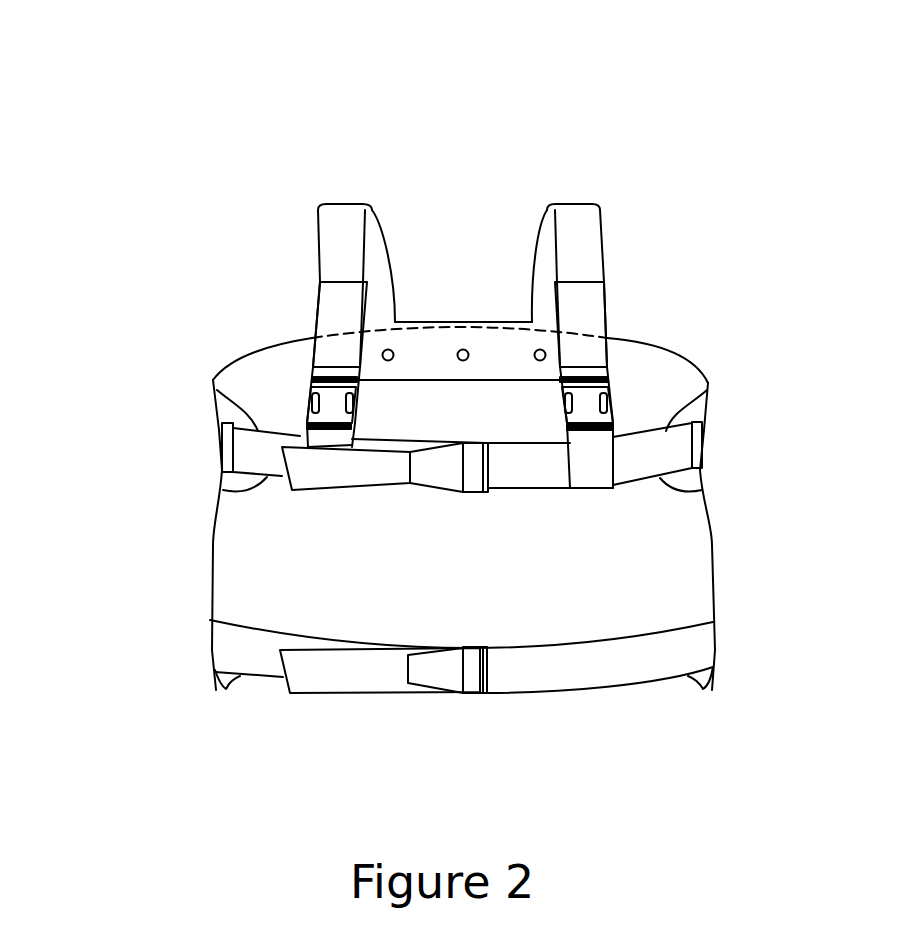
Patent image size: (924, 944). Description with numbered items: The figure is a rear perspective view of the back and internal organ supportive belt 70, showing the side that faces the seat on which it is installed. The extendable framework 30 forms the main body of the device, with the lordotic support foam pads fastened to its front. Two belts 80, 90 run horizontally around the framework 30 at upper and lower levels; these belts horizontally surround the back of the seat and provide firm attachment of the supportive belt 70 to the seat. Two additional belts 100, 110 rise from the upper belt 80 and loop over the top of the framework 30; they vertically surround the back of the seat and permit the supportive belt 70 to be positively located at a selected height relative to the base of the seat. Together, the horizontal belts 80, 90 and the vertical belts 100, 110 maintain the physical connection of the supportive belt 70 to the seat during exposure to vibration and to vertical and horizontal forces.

The back and internal organ supportive belt 70 is at (841, 139).
The extendable framework 30 is at (243, 373).
The belt 80 is at (248, 457).
The belt 90 is at (227, 653).
The additional belt 100 is at (332, 235).
The additional belt 110 is at (582, 227).